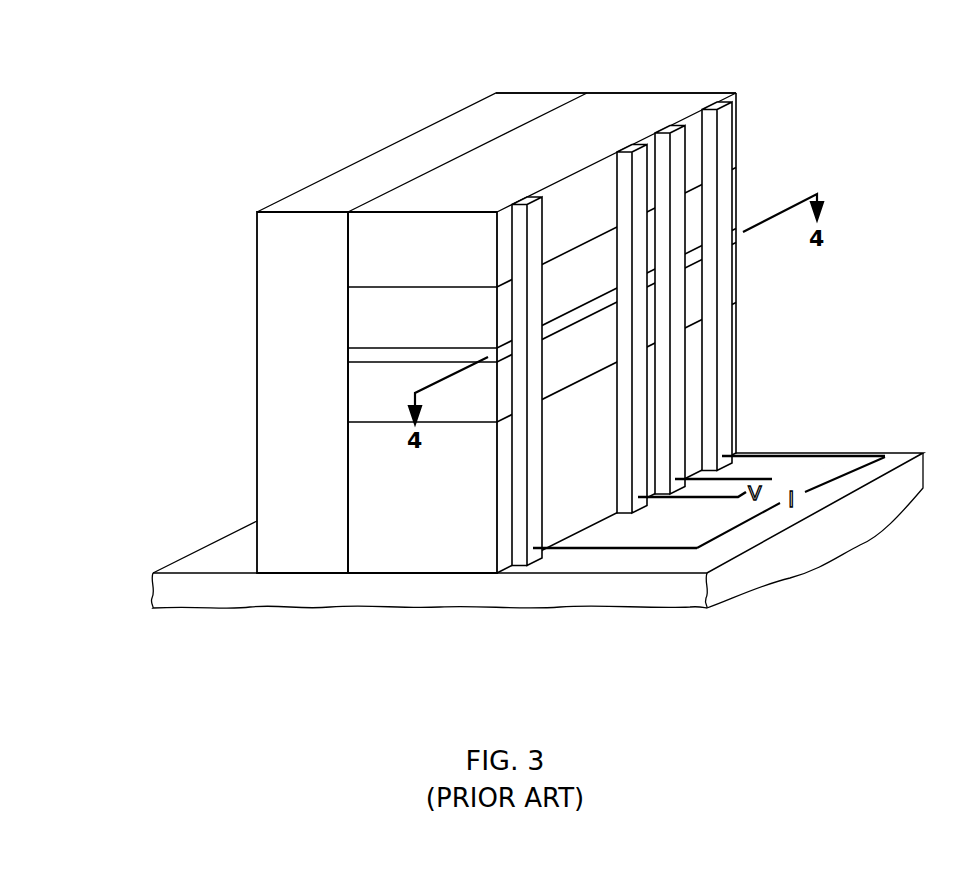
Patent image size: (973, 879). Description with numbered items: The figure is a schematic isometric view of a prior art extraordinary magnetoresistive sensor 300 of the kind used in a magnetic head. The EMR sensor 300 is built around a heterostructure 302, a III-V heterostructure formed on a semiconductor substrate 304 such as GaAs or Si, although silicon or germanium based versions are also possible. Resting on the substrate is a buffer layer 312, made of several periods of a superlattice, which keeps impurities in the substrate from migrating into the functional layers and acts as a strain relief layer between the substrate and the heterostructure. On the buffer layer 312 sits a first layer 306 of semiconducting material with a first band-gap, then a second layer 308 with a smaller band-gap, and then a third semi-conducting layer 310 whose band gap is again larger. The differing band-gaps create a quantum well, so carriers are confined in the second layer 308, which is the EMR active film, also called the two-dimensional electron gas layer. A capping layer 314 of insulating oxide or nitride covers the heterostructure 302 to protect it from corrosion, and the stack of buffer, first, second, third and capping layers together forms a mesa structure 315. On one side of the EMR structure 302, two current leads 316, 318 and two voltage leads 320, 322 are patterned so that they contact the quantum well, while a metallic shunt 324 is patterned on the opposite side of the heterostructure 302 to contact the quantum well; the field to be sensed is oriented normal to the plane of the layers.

The extraordinary magnetoresistive sensor 300 is at (722, 61).
The heterostructure 302 is at (332, 285).
The semiconductor substrate 304 is at (226, 548).
The first layer 306 is at (408, 393).
The second layer 308 is at (437, 357).
The third semi-conducting layer 310 is at (416, 333).
The buffer layer 312 is at (453, 498).
The capping layer 314 is at (456, 262).
The mesa structure 315 is at (632, 93).
The current lead 316 is at (527, 204).
The current lead 318 is at (716, 104).
The voltage lead 320 is at (632, 146).
The voltage lead 322 is at (675, 127).
The metallic shunt 324 is at (272, 272).